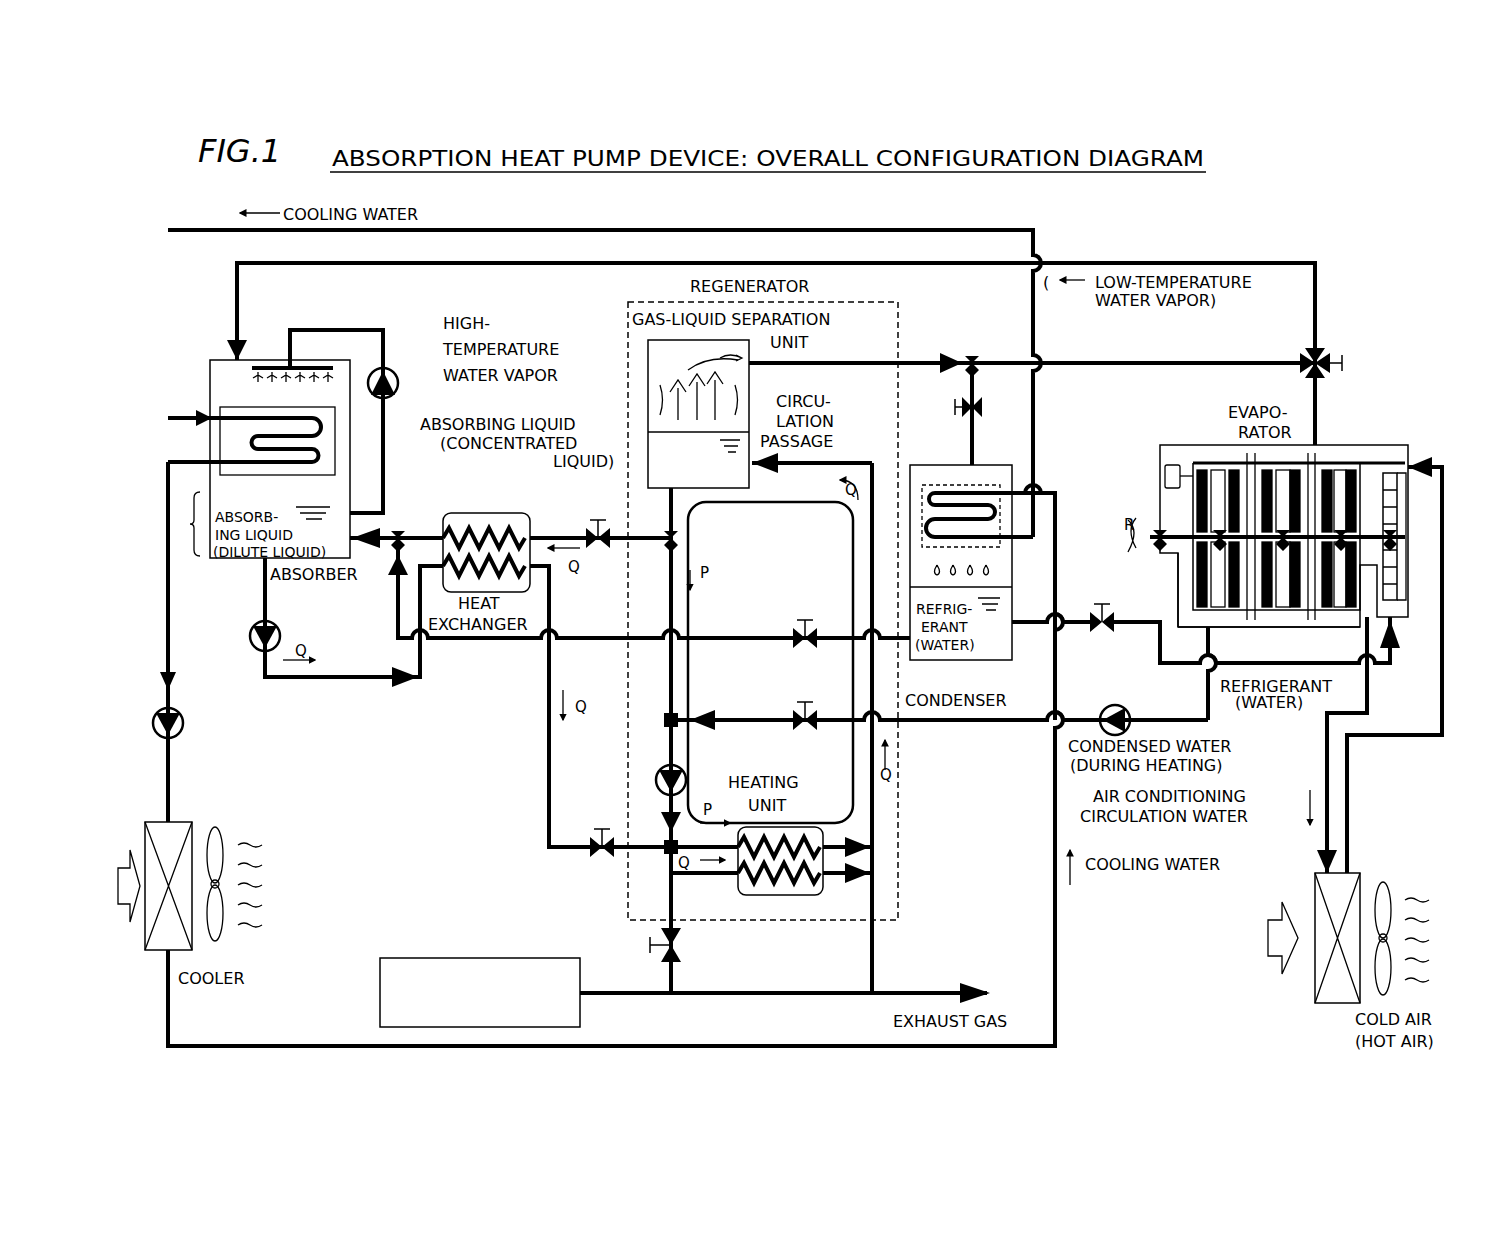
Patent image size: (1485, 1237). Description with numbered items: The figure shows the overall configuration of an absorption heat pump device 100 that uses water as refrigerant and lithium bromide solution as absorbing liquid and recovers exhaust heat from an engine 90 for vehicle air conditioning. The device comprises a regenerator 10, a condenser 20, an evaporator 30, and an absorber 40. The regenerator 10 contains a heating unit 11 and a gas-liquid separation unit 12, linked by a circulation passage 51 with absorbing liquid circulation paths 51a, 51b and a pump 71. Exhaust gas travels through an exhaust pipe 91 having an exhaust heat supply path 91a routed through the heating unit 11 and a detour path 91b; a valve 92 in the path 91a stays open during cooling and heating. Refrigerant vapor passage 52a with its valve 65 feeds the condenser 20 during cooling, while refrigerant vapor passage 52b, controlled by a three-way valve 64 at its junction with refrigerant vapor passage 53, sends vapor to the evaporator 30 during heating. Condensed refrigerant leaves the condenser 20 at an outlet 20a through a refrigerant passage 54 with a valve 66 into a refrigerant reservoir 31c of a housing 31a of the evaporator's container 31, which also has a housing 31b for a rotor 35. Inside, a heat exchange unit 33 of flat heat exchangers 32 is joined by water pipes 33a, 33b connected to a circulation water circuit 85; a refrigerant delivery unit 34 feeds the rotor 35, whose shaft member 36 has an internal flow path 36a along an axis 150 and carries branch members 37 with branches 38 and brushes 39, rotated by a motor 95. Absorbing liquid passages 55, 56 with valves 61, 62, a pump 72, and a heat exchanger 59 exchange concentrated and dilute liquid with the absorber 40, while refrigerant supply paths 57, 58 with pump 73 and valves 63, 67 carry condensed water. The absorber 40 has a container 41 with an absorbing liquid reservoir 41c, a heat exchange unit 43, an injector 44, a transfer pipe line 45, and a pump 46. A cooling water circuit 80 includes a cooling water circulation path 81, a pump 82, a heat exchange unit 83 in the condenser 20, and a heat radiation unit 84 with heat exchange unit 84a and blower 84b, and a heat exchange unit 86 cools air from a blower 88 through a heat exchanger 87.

The absorption heat pump device 100 is at (187, 188).
The regenerator 10 is at (880, 302).
The heating unit 11 is at (738, 892).
The gas-liquid separation unit 12 is at (749, 408).
The condenser 20 is at (934, 464).
The condenser outlet 20a is at (1017, 658).
The evaporator 30 is at (1252, 497).
The container 31 is at (1217, 463).
The housing 31a is at (1373, 737).
The housing 31b is at (1185, 592).
The refrigerant reservoir 31c is at (1342, 745).
The heat exchanger 32 is at (1276, 574).
The heat exchange unit 33 is at (1209, 509).
The water pipe 33a is at (1406, 460).
The water pipe 33b is at (1190, 617).
The refrigerant delivery unit 34 is at (1385, 460).
The rotor 35 is at (1392, 480).
The shaft member 36 is at (1175, 530).
The internal flow path 36a is at (1337, 605).
The branch member 37 is at (1205, 458).
The branch 38 is at (1151, 450).
The brush 39 is at (1210, 465).
The absorber 40 is at (272, 357).
The container 41 is at (204, 402).
The absorbing liquid reservoir 41c is at (194, 556).
The heat exchange unit 43 is at (233, 407).
The injector 44 is at (312, 353).
The absorbing liquid transfer pipe line 45 is at (320, 330).
The pump 46 is at (396, 373).
The circulation passage 51 is at (848, 410).
The absorbing liquid circulation path 51a is at (668, 592).
The absorbing liquid circulation path 51b is at (878, 457).
The refrigerant vapor passage 52a is at (936, 362).
The refrigerant vapor passage 52b is at (1192, 360).
The refrigerant vapor passage 53 is at (1172, 262).
The refrigerant passage 54 is at (1050, 612).
The absorbing liquid passage 55 is at (420, 527).
The absorbing liquid passage 56 is at (375, 674).
The refrigerant supply path 57 is at (1172, 708).
The refrigerant supply path 58 is at (605, 636).
The heat exchanger 59 is at (515, 513).
The valve 61 is at (586, 522).
The valve 62 is at (595, 831).
The valve 63 is at (793, 701).
The three-way valve 64 is at (1348, 352).
The valve 65 is at (953, 404).
The valve 66 is at (1101, 602).
The valve 67 is at (793, 618).
The pump 71 is at (660, 763).
The pump 72 is at (278, 629).
The pump 73 is at (1103, 708).
The cooling water circuit 80 is at (152, 630).
The cooling water circulation path 81 is at (475, 230).
The pump 82 is at (154, 710).
The heat exchange unit 83 is at (984, 462).
The heat radiation unit 84 is at (190, 855).
The heat exchange unit 84a is at (145, 828).
The blower 84b is at (217, 828).
The circulation water circuit 85 is at (1350, 753).
The heat exchange unit 86 is at (1367, 844).
The heat exchanger 87 is at (1313, 885).
The blower 88 is at (1387, 883).
The engine 90 is at (462, 956).
The exhaust pipe 91 is at (616, 992).
The exhaust heat supply path 91a is at (670, 901).
The detour path 91b is at (823, 992).
The valve 92 is at (645, 945).
The motor 95 is at (1165, 470).
The axis 150 is at (1140, 540).